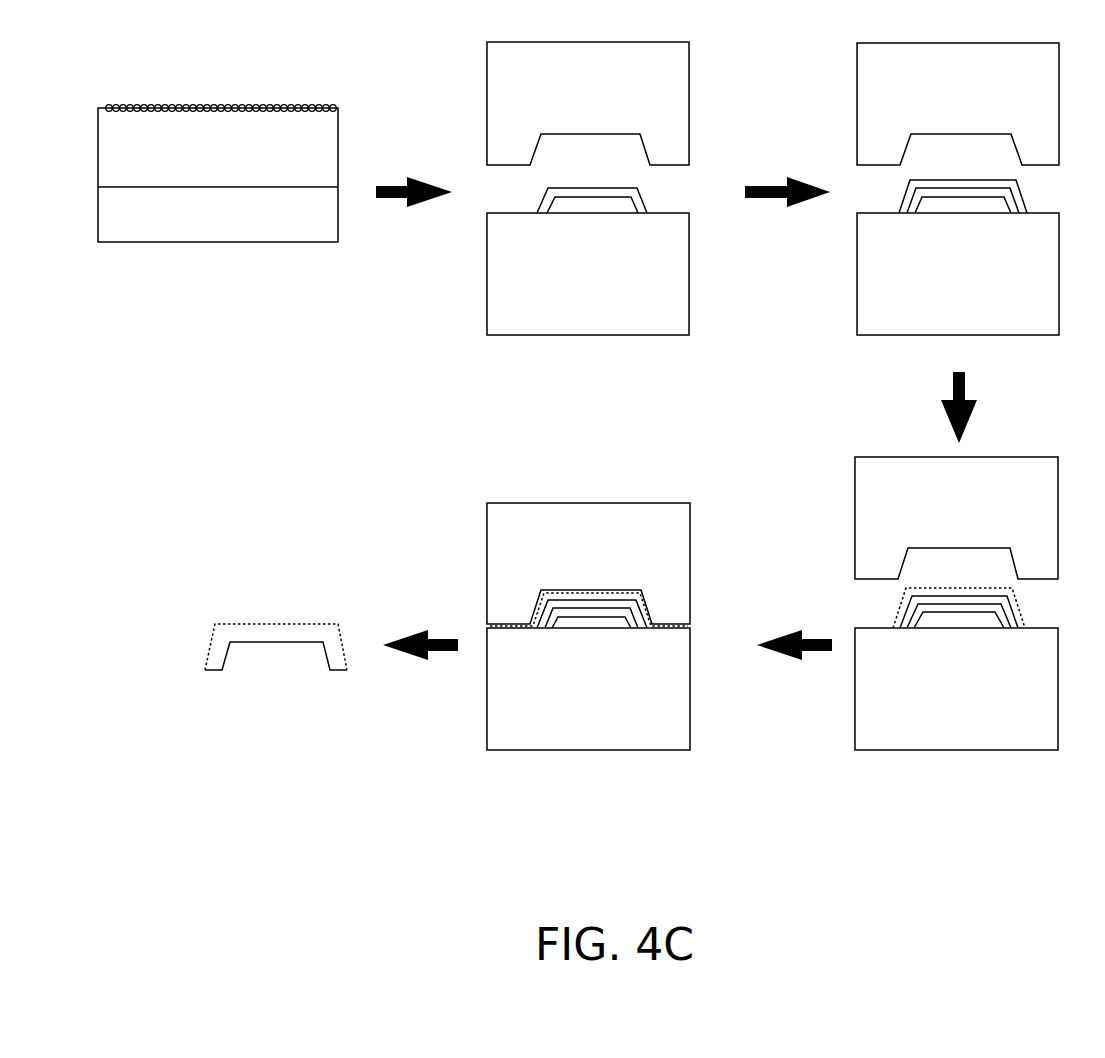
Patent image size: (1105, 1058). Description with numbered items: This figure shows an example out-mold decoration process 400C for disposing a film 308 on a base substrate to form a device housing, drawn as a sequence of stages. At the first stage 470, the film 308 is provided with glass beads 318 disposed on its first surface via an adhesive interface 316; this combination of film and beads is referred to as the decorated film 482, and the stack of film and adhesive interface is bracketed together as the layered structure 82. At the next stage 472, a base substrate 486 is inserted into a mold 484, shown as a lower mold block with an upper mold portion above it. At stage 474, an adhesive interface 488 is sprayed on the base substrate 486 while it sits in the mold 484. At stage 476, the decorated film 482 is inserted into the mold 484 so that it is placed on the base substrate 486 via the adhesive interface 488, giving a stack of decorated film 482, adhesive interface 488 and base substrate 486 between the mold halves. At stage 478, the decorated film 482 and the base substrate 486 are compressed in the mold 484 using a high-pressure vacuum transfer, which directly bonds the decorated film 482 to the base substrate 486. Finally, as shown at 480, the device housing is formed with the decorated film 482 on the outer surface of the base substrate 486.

The out-mold decoration process 400C is at (830, 862).
The film stack 82 is at (83, 110).
The adhesive interface 316 is at (304, 170).
The film 308 is at (268, 225).
The glass beads 318 is at (312, 103).
The providing step 470 is at (220, 346).
The base substrate insertion step 472 is at (630, 357).
The adhesive spraying step 474 is at (978, 354).
The decorated film insertion step 476 is at (938, 776).
The compression step 478 is at (572, 779).
The formed device housing 480 is at (263, 702).
The mold 484 is at (646, 428).
The base substrate 486 is at (646, 428).
The adhesive interface 488 is at (646, 428).
The decorated film 482 is at (646, 428).